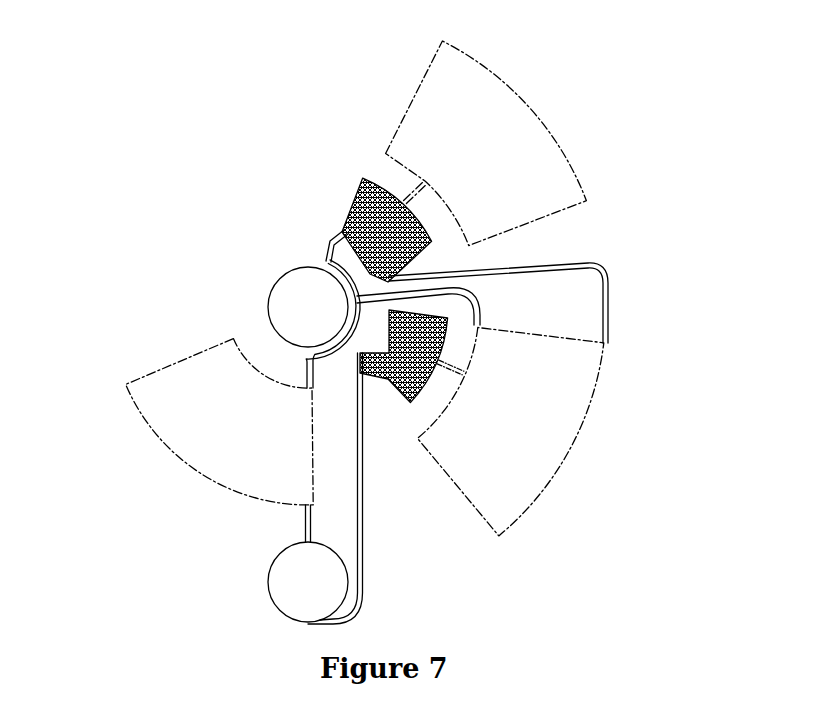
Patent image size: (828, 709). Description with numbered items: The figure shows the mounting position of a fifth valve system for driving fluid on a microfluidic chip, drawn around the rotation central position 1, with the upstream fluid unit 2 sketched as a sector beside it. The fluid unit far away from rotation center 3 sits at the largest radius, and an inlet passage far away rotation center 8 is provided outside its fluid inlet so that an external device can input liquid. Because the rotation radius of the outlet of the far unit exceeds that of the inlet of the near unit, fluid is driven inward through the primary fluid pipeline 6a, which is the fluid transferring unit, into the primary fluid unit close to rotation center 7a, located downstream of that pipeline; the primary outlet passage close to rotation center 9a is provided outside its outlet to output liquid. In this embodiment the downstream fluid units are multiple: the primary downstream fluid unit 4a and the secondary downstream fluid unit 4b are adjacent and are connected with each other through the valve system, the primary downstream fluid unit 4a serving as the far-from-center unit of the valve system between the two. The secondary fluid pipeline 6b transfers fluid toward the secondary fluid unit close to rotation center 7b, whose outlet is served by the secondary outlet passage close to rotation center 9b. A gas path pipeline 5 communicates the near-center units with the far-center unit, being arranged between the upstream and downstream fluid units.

The rotation central position 1 is at (306, 308).
The upstream fluid unit 2 is at (180, 406).
The fluid unit far away from rotation center 3 is at (308, 582).
The primary downstream fluid unit 4a is at (545, 452).
The secondary downstream fluid unit 4b is at (513, 121).
The gas path pipeline 5 is at (327, 249).
The primary fluid pipeline 6a is at (362, 582).
The secondary fluid pipeline 6b is at (600, 274).
The primary fluid unit close to rotation center 7a is at (388, 365).
The secondary fluid unit close to rotation center 7b is at (350, 225).
The inlet passage far away rotation center 8 is at (303, 530).
The primary outlet passage close to rotation center 9a is at (463, 374).
The secondary outlet passage close to rotation center 9b is at (425, 184).